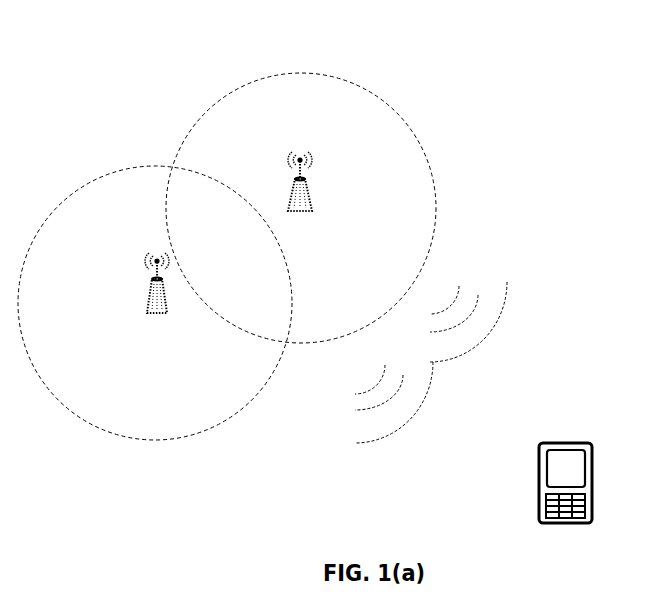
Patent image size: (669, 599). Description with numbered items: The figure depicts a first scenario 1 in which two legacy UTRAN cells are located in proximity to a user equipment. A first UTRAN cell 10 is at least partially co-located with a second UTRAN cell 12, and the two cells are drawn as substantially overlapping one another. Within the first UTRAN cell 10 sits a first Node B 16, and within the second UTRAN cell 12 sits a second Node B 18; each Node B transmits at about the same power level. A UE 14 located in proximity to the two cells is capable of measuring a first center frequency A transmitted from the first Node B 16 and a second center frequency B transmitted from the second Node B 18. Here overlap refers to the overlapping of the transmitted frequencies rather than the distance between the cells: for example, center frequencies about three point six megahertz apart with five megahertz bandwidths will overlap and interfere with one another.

The first scenario 1 is at (140, 50).
The first UTRAN cell 10 is at (90, 182).
The second UTRAN cell 12 is at (377, 100).
The UE 14 is at (592, 452).
The first Node B 16 is at (145, 299).
The second Node B 18 is at (287, 194).
The first center frequency A is at (334, 426).
The second center frequency B is at (483, 267).